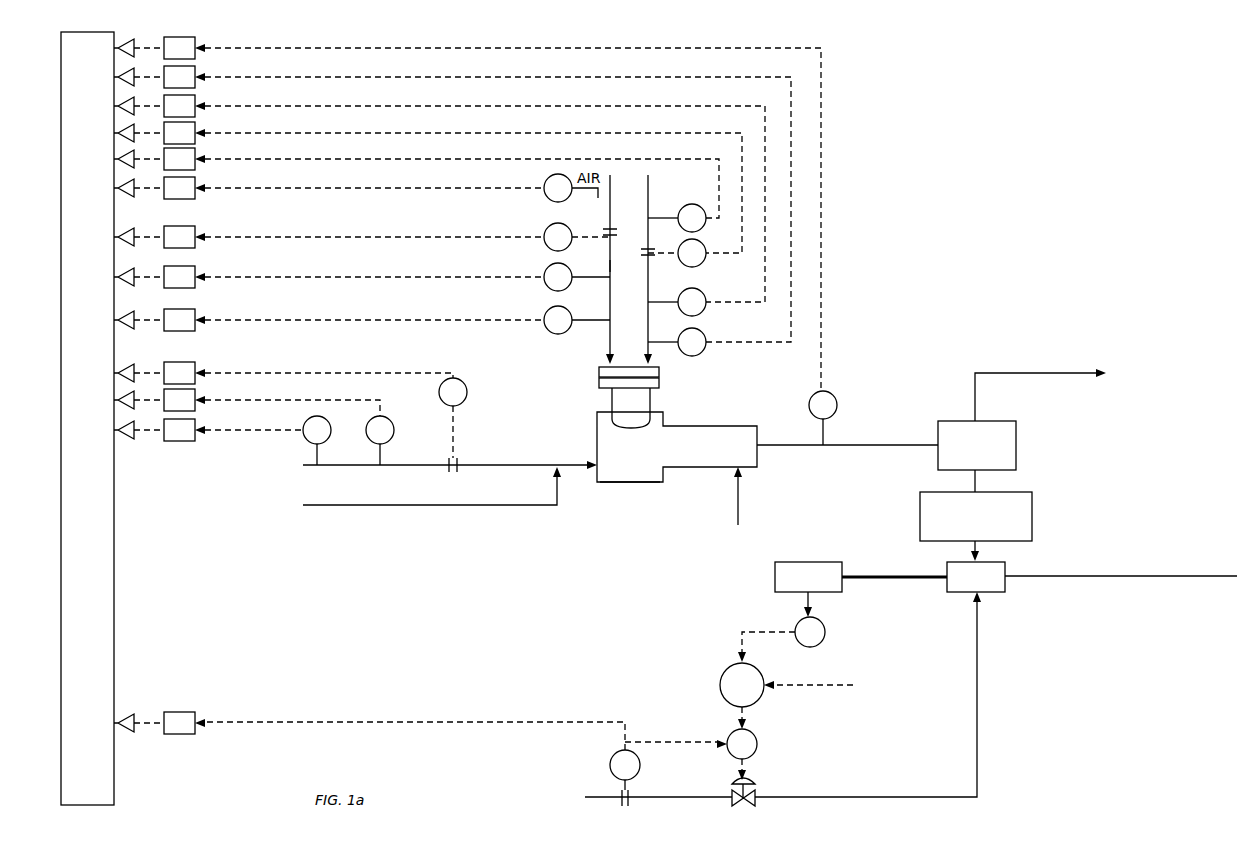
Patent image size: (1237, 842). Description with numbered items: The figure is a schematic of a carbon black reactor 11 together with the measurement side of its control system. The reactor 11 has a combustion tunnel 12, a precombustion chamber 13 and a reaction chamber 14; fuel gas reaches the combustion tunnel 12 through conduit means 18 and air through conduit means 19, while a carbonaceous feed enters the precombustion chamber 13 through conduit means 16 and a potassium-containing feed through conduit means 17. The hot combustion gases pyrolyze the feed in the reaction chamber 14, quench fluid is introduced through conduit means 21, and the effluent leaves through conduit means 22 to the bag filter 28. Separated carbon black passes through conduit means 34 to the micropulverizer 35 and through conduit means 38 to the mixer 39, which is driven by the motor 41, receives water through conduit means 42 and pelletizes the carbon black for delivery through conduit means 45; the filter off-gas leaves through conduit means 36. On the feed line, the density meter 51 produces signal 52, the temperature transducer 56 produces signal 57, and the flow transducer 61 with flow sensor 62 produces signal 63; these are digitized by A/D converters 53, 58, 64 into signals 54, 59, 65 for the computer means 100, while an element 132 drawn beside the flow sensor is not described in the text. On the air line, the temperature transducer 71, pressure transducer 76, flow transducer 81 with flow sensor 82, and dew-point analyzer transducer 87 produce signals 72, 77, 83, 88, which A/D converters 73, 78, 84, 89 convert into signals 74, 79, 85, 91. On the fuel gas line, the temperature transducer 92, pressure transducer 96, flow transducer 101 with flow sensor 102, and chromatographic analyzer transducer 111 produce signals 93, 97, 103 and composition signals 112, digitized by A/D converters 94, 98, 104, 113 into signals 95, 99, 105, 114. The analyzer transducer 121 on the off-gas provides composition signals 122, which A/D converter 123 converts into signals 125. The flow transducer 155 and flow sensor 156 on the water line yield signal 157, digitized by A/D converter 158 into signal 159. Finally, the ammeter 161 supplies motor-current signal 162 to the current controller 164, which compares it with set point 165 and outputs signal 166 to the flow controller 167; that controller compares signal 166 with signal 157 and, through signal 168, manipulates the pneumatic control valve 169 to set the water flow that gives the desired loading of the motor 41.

The computer means 100 is at (114, 748).
The signal 125 is at (147, 47).
The A/D converter 123 is at (193, 57).
The signal 95 is at (147, 76).
The A/D converter 94 is at (193, 86).
The signal 99 is at (147, 105).
The A/D converter 98 is at (193, 115).
The signal 105 is at (147, 132).
The A/D converter 104 is at (193, 142).
The signal 114 is at (147, 158).
The A/D converter 113 is at (193, 168).
The signal 91 is at (147, 187).
The A/D converter 89 is at (193, 197).
The signal 85 is at (147, 236).
The A/D converter 84 is at (193, 246).
The signal 79 is at (147, 276).
The A/D converter 78 is at (193, 286).
The signal 74 is at (147, 319).
The A/D converter 73 is at (193, 329).
The signal 65 is at (147, 372).
The A/D converter 64 is at (193, 382).
The signal 59 is at (147, 399).
The A/D converter 58 is at (193, 409).
The signal 54 is at (147, 429).
The analog-to-digital converter 53 is at (193, 439).
The signal 159 is at (152, 722).
The A/D converter 158 is at (190, 712).
The output signal 88 is at (474, 188).
The output signal 83 is at (476, 237).
The output signal 77 is at (476, 277).
The output signal 72 is at (476, 320).
The analyzer transducer 87 is at (546, 178).
The flow transducer 81 is at (546, 227).
The pressure transducer 76 is at (546, 267).
The temperature transducer 71 is at (546, 310).
The conduit means 19 is at (612, 300).
The flow sensor 82 is at (614, 231).
The flow sensor 102 is at (625, 269).
The conduit means 18 is at (646, 196).
The flow transducer 101 is at (652, 258).
The signal 112 is at (703, 226).
The analyzer transducer 111 is at (719, 205).
The output signal 103 is at (742, 260).
The pressure transducer 96 is at (702, 312).
The output signal 97 is at (765, 306).
The temperature transducer 92 is at (702, 352).
The output signal 93 is at (791, 346).
The signal 122 is at (821, 232).
The analyzer transducer 121 is at (837, 405).
The reaction chamber 14 is at (730, 426).
The combustion tunnel 12 is at (599, 380).
The precombustion chamber 13 is at (645, 482).
The carbon black reactor 11 is at (608, 493).
The conduit means 21 is at (740, 480).
The conduit means 22 is at (795, 447).
The conduit means 16 is at (365, 467).
The conduit means 17 is at (375, 507).
The density meter 51 is at (329, 437).
The output signal 52 is at (286, 429).
The temperature transducer 56 is at (392, 437).
The output signal 57 is at (350, 399).
The flow transducer 61 is at (440, 395).
The output signal 63 is at (350, 373).
The flow sensor 62 is at (446, 472).
The orifice plate 132 is at (457, 474).
The filter 28 is at (1000, 421).
The conduit means 36 is at (975, 385).
The conduit means 34 is at (977, 480).
The micropulverizer 35 is at (1032, 515).
The conduit means 38 is at (978, 548).
The mixer 39 is at (955, 592).
The conduit means 45 is at (1125, 576).
The motor 41 is at (820, 562).
The ammeter 161 is at (825, 636).
The output signal 162 is at (766, 632).
The current controller 164 is at (758, 669).
The set point input 165 is at (818, 687).
The output signal 166 is at (752, 705).
The flow controller 167 is at (757, 742).
The output signal 168 is at (750, 765).
The pneumatic control valve 169 is at (757, 782).
The conduit means 42 is at (977, 750).
The flow sensor 156 is at (618, 794).
The flow transducer 155 is at (640, 766).
The output signal 157 is at (625, 722).